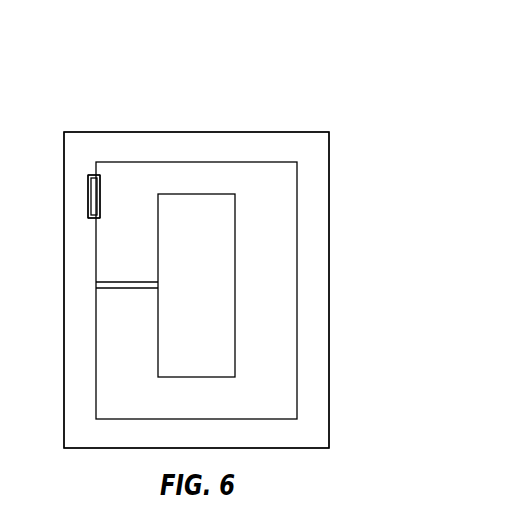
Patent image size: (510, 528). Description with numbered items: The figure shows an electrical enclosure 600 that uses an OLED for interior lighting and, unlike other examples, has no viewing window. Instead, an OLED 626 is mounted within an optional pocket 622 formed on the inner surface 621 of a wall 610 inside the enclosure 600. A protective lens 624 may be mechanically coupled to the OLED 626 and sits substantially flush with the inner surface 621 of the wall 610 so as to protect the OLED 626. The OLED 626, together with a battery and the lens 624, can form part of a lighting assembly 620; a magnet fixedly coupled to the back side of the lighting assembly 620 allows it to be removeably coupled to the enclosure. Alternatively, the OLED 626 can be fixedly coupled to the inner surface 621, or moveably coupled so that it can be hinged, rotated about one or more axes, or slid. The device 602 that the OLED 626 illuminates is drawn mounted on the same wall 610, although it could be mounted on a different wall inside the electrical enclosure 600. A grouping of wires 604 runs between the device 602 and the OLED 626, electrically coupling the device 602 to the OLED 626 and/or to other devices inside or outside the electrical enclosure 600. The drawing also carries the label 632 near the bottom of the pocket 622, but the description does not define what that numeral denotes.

The electrical enclosure 600 is at (299, 82).
The wall 610 is at (200, 140).
The inner surface 621 is at (95, 338).
The device 602 is at (216, 296).
The grouping of wires 604 is at (110, 286).
The lighting assembly 620 is at (84, 193).
The pocket 622 is at (90, 173).
The protective lens 624 is at (99, 205).
The OLED 626 is at (88, 207).
The port bottom portion 632 is at (95, 219).